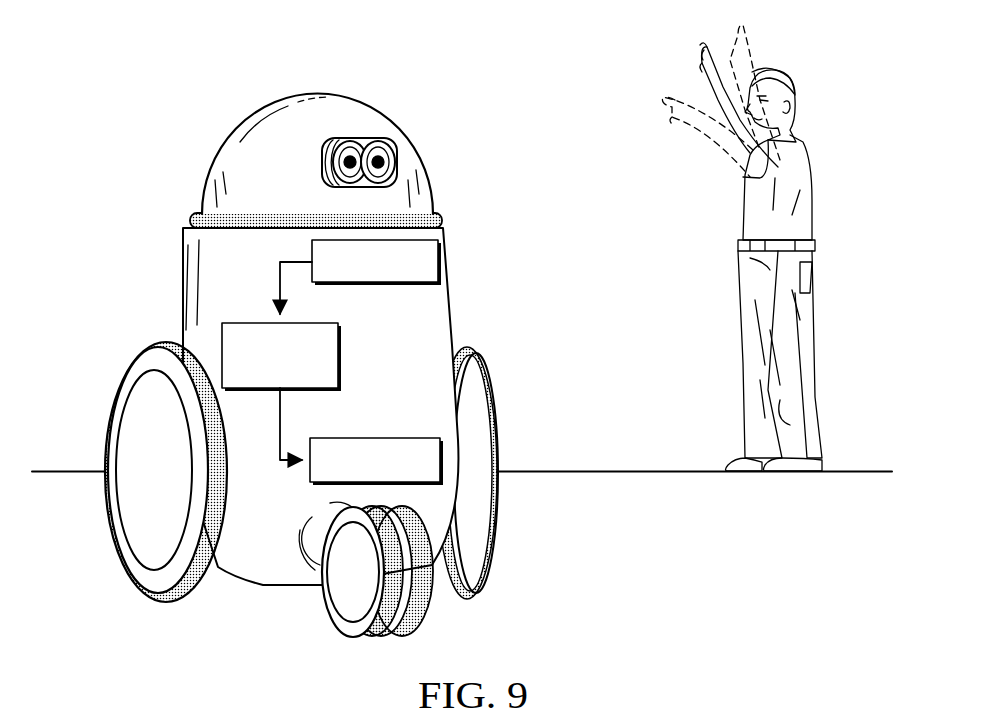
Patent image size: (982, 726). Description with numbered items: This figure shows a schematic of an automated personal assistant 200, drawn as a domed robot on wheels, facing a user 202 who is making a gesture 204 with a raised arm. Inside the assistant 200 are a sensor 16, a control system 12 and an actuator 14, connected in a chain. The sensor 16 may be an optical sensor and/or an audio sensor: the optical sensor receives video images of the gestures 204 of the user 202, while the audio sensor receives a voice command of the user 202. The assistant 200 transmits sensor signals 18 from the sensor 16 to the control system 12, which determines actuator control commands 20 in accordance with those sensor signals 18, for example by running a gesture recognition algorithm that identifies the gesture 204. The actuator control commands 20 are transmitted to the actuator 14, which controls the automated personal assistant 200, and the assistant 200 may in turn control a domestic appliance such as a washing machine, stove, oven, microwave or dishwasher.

The automated personal assistant 200 is at (253, 108).
The user 202 is at (815, 198).
The gesture 204 is at (702, 49).
The control system 12 is at (338, 358).
The actuator 14 is at (393, 438).
The sensor 16 is at (402, 283).
The sensor signals 18 is at (280, 281).
The actuator control commands 20 is at (280, 405).